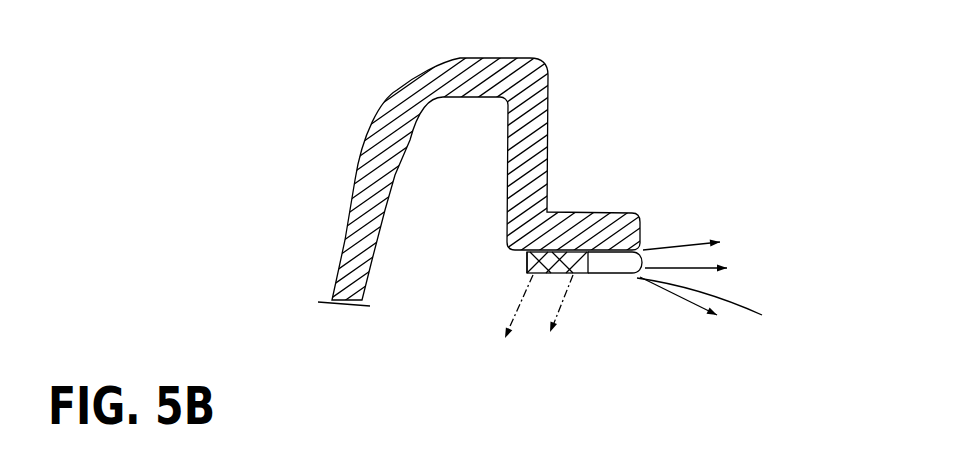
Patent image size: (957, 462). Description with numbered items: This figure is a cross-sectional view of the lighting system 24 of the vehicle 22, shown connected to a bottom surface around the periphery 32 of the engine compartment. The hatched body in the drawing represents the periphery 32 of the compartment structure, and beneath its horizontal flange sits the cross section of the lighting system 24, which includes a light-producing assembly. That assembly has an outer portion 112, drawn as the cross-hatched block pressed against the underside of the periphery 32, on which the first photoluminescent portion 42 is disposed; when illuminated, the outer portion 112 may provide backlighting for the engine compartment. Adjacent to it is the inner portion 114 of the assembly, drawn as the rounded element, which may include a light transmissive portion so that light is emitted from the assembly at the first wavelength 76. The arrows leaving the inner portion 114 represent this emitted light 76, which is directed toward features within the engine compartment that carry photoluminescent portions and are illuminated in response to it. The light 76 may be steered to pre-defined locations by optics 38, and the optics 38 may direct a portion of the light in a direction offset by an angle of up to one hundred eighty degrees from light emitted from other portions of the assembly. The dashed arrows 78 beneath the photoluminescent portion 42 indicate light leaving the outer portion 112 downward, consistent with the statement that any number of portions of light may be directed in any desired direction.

The vehicle 22 is at (332, 148).
The periphery 32 is at (547, 135).
The lighting system 24 is at (657, 232).
The outer portion 112 is at (512, 262).
The photoluminescent portion 42 is at (528, 273).
The leakage flow 78 is at (513, 310).
The inner portion 114 is at (621, 283).
The first wavelength 76 is at (687, 300).
The optics 38 is at (717, 308).